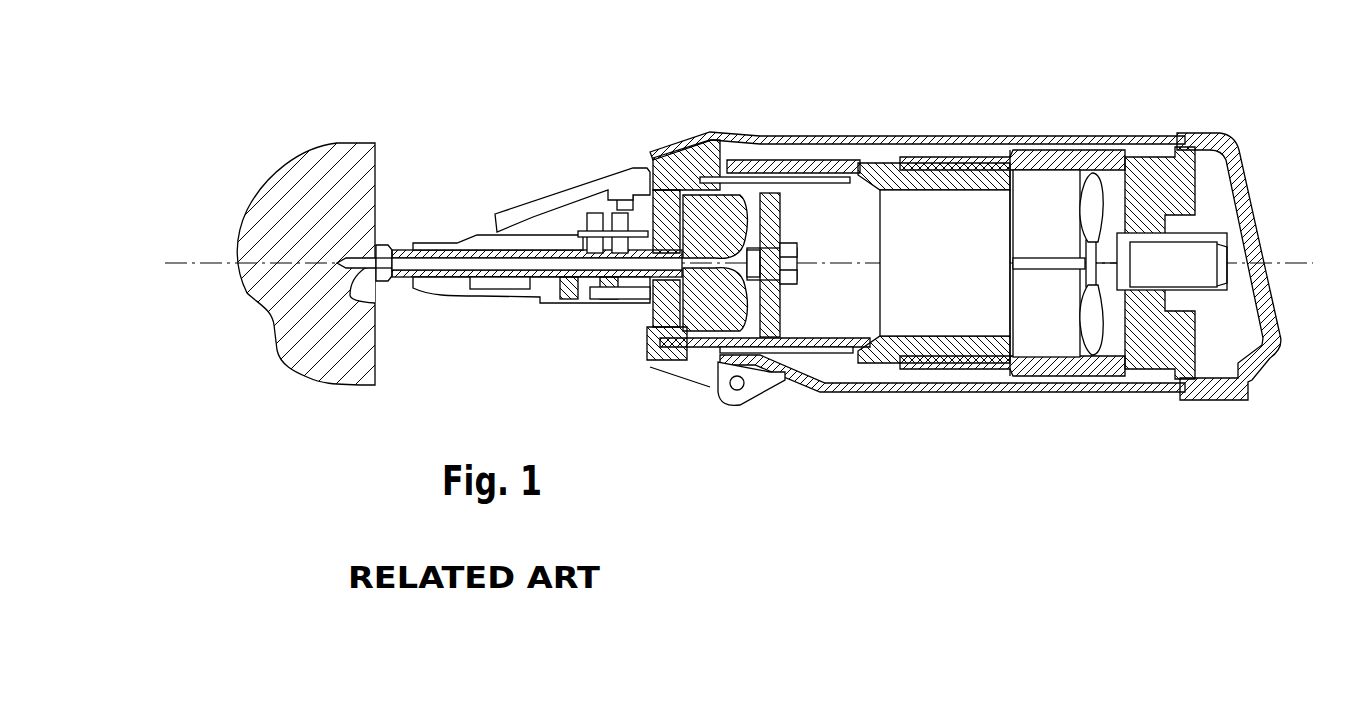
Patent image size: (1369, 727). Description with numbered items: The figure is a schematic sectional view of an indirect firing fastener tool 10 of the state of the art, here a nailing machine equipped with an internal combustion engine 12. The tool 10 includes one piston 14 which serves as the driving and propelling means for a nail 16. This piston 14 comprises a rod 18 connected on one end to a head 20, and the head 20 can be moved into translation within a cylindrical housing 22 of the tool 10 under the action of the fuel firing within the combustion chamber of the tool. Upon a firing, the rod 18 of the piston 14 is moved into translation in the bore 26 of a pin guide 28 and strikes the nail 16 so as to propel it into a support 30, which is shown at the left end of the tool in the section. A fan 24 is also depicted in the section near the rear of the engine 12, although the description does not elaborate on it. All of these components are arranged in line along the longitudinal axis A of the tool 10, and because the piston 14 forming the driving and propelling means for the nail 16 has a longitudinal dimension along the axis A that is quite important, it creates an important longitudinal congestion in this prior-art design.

The indirect firing fastener tool 10 is at (680, 115).
The internal combustion engine 12 is at (1063, 215).
The piston 14 is at (708, 278).
The nail 16 is at (357, 300).
The rod 18 is at (583, 272).
The head 20 is at (773, 307).
The cylindrical housing 22 is at (890, 205).
The fan 24 is at (1053, 302).
The bore 26 is at (427, 268).
The pin guide 28 is at (485, 255).
The support 30 is at (300, 180).
The axis A is at (202, 263).